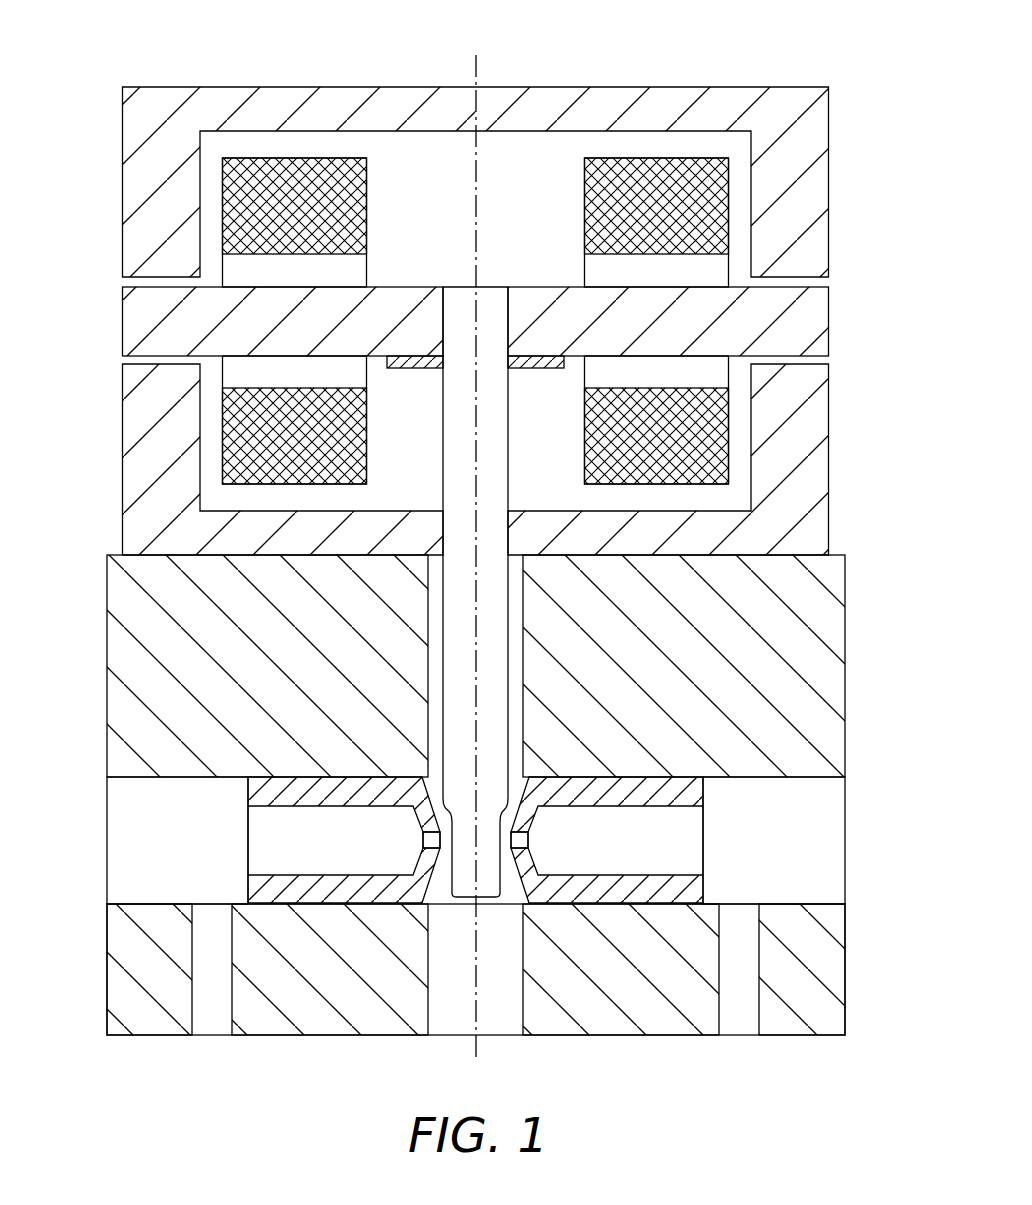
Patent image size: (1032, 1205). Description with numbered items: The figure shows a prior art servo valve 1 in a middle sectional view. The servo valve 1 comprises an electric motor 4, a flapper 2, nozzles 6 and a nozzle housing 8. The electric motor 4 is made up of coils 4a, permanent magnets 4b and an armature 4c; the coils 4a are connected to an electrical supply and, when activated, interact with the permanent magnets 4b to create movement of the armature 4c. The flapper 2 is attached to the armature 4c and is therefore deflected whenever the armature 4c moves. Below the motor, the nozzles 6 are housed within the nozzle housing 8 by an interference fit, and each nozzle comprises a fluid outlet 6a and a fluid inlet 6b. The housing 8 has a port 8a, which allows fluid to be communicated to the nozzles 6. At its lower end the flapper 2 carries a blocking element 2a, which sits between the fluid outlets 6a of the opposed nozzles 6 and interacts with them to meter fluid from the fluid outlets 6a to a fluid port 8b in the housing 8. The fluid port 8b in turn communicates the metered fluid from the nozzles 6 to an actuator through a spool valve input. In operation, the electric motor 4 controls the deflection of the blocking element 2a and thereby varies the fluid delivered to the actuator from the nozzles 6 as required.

The servo valve 1 is at (116, 72).
The flapper 2 is at (495, 432).
The blocking element 2a is at (469, 847).
The electric motor 4 is at (665, 72).
The coils 4a is at (583, 205).
The permanent magnets 4b is at (813, 185).
The armature 4c is at (813, 318).
The nozzles 6 is at (263, 885).
The fluid outlet 6a is at (425, 837).
The fluid inlet 6b is at (263, 840).
The nozzle housing 8 is at (120, 662).
The port 8a is at (212, 1023).
The fluid port 8b is at (452, 1023).